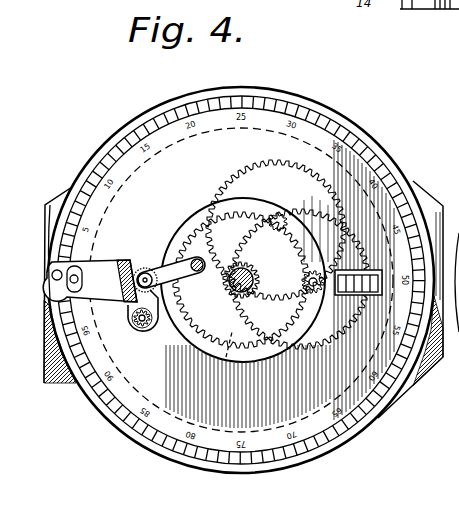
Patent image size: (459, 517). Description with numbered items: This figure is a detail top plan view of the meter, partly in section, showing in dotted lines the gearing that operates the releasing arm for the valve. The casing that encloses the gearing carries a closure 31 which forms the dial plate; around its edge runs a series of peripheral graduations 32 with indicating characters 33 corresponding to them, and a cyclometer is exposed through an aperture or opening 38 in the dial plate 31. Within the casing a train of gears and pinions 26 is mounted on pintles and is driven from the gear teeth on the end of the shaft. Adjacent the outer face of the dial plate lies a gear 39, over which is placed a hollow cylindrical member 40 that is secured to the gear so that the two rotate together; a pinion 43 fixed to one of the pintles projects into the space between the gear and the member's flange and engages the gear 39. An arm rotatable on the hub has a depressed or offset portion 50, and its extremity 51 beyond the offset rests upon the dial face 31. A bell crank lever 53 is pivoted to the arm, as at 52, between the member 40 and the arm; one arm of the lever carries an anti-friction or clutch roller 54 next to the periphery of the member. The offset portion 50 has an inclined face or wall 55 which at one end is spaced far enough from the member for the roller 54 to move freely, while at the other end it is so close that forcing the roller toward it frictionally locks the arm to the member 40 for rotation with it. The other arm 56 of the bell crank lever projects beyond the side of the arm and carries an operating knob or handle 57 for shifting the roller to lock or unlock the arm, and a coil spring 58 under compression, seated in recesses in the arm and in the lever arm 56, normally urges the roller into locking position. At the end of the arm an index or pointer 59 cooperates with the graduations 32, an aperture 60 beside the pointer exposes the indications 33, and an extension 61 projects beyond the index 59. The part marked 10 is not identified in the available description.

The casing 10 is at (371, 131).
The train of gears and pinions 26 is at (266, 166).
The closure 31 is at (272, 423).
The peripheral graduations 32 is at (343, 123).
The indicating characters 33 is at (167, 116).
The aperture or opening 38 is at (357, 270).
The gear 39 is at (222, 359).
The hollow cylindrical member 40 is at (207, 207).
The pinion 43 is at (318, 290).
The offset portion 50 is at (124, 259).
The extremity 51 is at (92, 268).
The pivot 52 is at (200, 262).
The bell crank lever 53 is at (178, 262).
The anti-friction or clutch roller 54 is at (152, 271).
The inclined face or wall 55 is at (144, 268).
The arm of the bell crank lever 56 is at (158, 329).
The operating knob or handle 57 is at (141, 328).
The coil spring 58 is at (136, 309).
The index or pointer 59 is at (70, 371).
The aperture 60 is at (74, 281).
The extension 61 is at (57, 199).